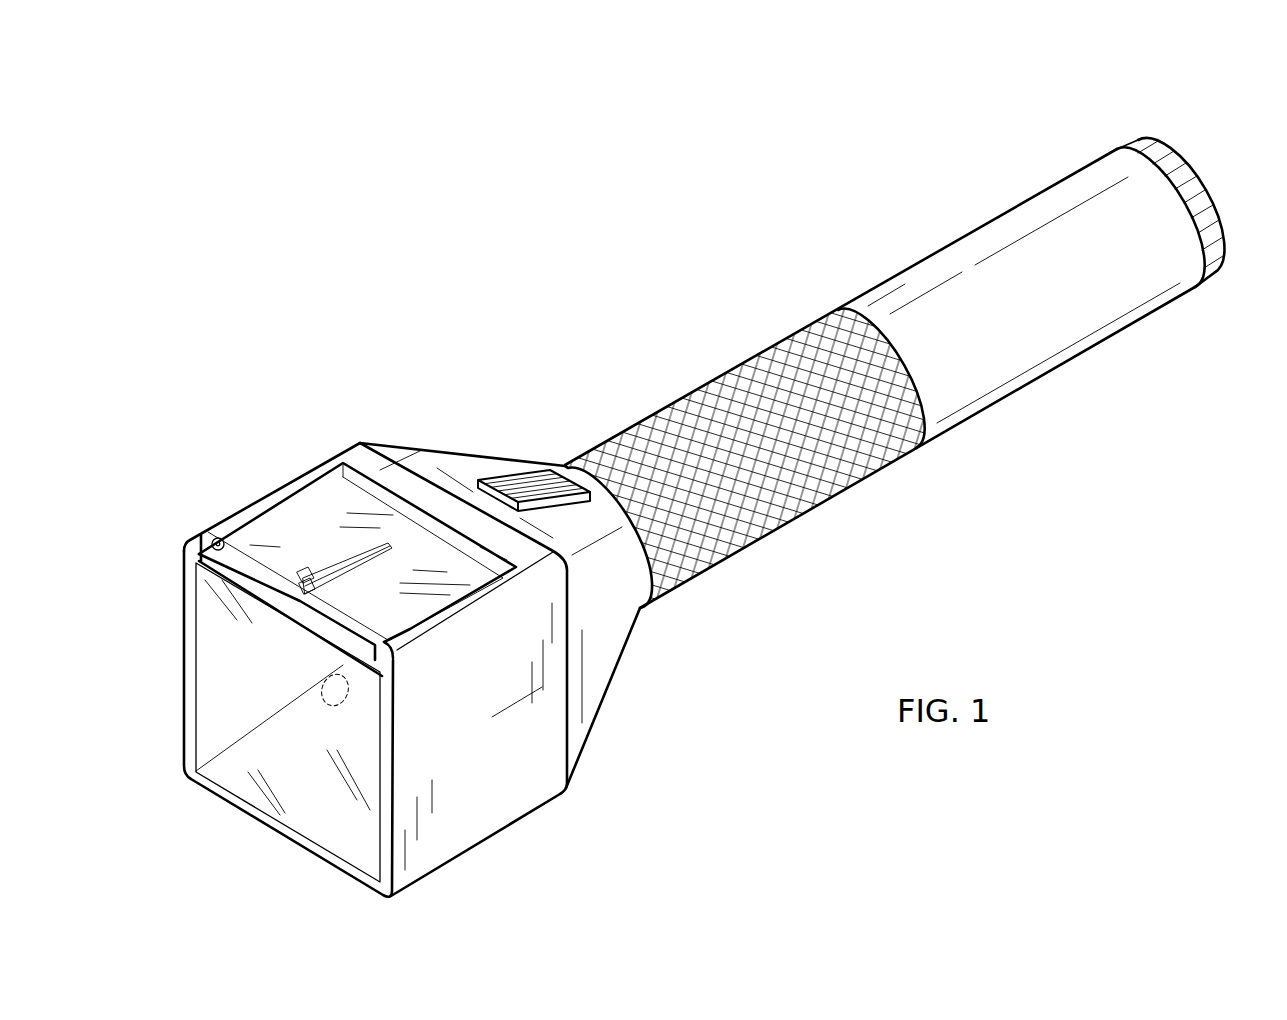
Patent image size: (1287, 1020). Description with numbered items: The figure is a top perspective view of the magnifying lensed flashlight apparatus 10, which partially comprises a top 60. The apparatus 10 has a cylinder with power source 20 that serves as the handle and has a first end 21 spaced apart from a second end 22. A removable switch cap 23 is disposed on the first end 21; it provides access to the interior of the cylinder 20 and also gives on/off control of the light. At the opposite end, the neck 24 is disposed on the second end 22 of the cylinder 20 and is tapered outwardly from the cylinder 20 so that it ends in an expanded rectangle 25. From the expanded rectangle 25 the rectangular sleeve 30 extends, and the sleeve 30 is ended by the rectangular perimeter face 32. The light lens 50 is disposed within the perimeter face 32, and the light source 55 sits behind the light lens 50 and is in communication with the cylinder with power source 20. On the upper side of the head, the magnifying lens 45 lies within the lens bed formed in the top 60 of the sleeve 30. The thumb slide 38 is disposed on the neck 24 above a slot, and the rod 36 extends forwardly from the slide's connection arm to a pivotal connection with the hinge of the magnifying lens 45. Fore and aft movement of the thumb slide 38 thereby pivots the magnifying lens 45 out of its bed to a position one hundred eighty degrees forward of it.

The magnifying lensed flashlight apparatus 10 is at (667, 288).
The cylinder with power source 20 is at (977, 407).
The first end 21 is at (1192, 306).
The second end 22 is at (658, 607).
The removable switch cap 23 is at (1191, 160).
The neck 24 is at (624, 704).
The expanded rectangle 25 is at (411, 455).
The rectangular sleeve 30 is at (481, 822).
The rectangular perimeter face 32 is at (343, 868).
The rod 36 is at (322, 569).
The thumb slide 38 is at (507, 482).
The magnifying lens 45 is at (314, 518).
The light lens 50 is at (303, 812).
The light source 55 is at (296, 690).
The top 60 is at (358, 458).